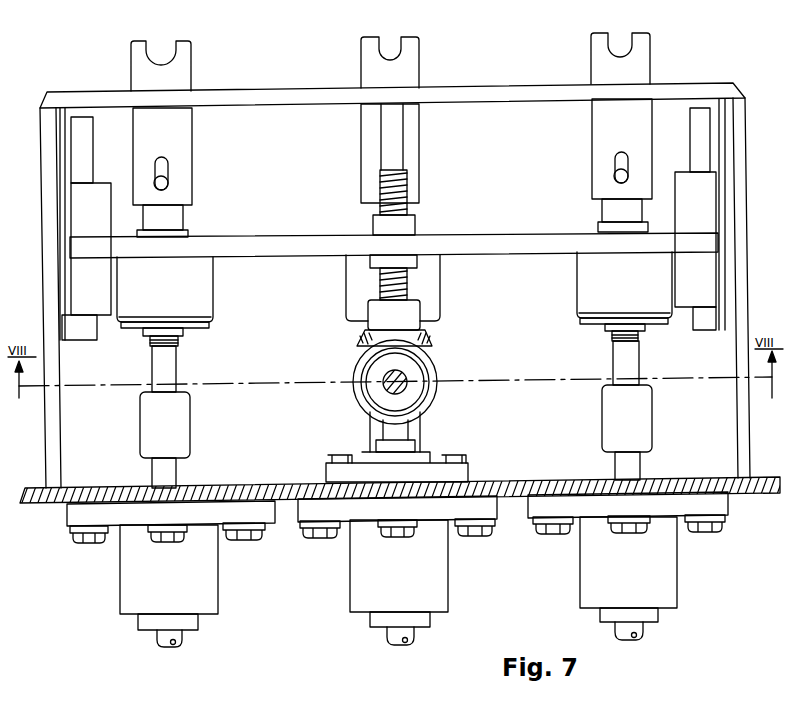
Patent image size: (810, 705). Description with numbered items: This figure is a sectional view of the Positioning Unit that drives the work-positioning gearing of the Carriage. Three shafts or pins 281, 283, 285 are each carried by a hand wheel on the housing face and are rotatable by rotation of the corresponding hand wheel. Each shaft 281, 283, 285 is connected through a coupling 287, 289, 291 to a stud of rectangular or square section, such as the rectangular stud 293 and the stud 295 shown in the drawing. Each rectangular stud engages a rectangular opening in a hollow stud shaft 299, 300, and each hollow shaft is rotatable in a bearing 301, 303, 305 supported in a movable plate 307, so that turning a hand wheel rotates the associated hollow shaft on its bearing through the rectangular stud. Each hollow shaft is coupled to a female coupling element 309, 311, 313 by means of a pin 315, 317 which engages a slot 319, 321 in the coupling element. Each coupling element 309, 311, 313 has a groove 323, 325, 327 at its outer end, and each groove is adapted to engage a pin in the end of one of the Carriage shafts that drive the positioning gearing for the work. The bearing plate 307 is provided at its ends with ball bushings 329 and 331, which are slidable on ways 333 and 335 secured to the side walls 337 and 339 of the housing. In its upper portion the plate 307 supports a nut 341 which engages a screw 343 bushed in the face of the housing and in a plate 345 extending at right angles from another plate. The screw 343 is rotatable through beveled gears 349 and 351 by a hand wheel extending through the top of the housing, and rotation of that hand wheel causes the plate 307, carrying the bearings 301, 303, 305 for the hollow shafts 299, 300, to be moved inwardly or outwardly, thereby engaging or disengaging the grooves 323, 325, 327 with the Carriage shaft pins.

The shaft 281 is at (178, 475).
The shaft 283 is at (413, 633).
The shaft 285 is at (613, 466).
The coupling 287 is at (190, 433).
The coupling 289 is at (420, 428).
The coupling 291 is at (602, 426).
The rectangular stud 293 is at (178, 341).
The lock nut 295 is at (612, 338).
The hollow stud shaft 299 is at (146, 333).
The hollow stud shaft 300 is at (645, 325).
The bearing 301 is at (205, 283).
The bearing 303 is at (433, 278).
The bearing 305 is at (582, 278).
The movable plate 307 is at (262, 230).
The female coupling element 309 is at (192, 122).
The female coupling element 311 is at (420, 122).
The female coupling element 313 is at (594, 119).
The pin 315 is at (168, 183).
The pin 317 is at (616, 176).
The slot 319 is at (168, 170).
The slot 321 is at (612, 158).
The groove 323 is at (144, 45).
The groove 325 is at (366, 45).
The groove 327 is at (598, 33).
The ball bushing 329 is at (98, 197).
The ball bushing 331 is at (677, 183).
The way 333 is at (85, 152).
The way 335 is at (697, 137).
The side wall 337 is at (63, 444).
The side wall 339 is at (735, 430).
The nut 341 is at (415, 228).
The screw 343 is at (400, 190).
The plate 345 is at (488, 88).
The beveled gear 349 is at (436, 364).
The beveled gear 351 is at (355, 343).